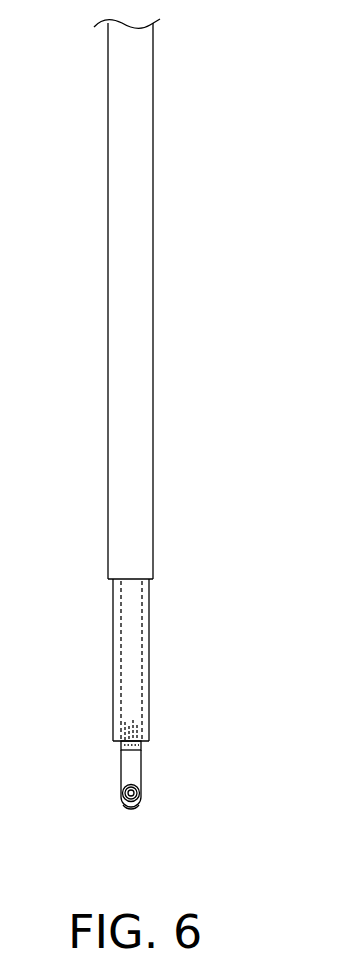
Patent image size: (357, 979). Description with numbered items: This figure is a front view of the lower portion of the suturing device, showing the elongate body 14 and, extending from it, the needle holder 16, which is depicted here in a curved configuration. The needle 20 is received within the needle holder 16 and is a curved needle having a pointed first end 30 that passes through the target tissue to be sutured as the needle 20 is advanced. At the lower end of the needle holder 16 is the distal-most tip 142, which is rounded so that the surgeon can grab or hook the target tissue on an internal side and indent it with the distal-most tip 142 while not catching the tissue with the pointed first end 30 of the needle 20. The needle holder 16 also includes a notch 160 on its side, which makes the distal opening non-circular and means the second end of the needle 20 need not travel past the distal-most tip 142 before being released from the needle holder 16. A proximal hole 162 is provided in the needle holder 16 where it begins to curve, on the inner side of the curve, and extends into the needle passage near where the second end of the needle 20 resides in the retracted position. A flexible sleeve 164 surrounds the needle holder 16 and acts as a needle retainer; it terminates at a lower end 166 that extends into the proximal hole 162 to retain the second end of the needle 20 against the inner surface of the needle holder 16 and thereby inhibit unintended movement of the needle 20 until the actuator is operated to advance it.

The elongate body 14 is at (144, 480).
The flexible sleeve 164 is at (113, 620).
The lower end 166 is at (148, 738).
The proximal hole 162 is at (114, 745).
The needle 20 is at (147, 748).
The needle holder 16 is at (121, 775).
The first end 30 is at (142, 795).
The distal-most tip 142 is at (125, 806).
The notch 160 is at (142, 808).